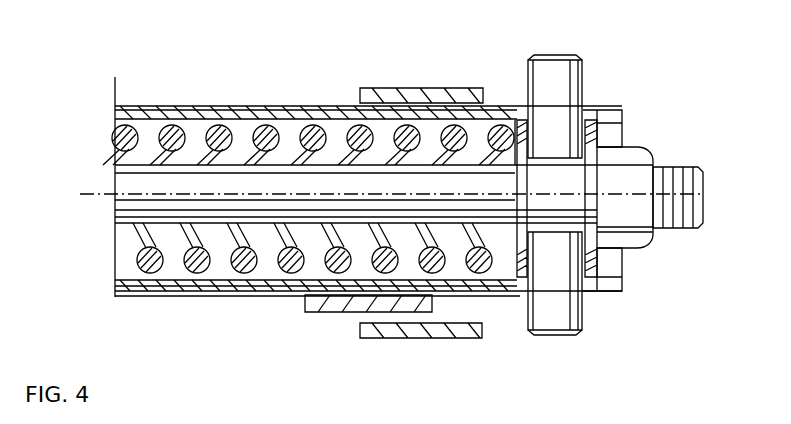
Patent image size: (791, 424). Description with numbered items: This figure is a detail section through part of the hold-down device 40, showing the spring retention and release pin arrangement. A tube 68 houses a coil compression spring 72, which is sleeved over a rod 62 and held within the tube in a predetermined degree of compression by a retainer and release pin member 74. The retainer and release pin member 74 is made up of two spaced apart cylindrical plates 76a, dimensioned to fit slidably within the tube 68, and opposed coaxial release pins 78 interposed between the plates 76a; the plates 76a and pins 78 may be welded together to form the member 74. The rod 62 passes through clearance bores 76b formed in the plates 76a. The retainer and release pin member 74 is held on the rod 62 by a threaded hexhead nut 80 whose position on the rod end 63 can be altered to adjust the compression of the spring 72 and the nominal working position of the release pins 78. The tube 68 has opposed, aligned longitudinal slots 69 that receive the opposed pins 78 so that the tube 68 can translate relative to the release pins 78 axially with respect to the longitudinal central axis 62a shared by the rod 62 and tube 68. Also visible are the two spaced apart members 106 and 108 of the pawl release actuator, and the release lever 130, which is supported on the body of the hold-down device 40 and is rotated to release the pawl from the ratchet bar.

The hold-down device 40 is at (224, 92).
The tube 68 is at (266, 108).
The longitudinal slots 69 is at (336, 107).
The spaced apart member 106 is at (372, 88).
The release lever 130 is at (301, 304).
The spaced apart member 108 is at (393, 338).
The rod 62 is at (120, 159).
The coil compression spring 72 is at (119, 236).
The longitudinal central axis 62a is at (105, 200).
The clearance bores 76b is at (518, 135).
The release pins 78 is at (562, 60).
The cylindrical plates 76a is at (597, 165).
The retainer and release pin member 74 is at (605, 259).
The threaded hexhead nut 80 is at (627, 215).
The rod end 63 is at (700, 172).